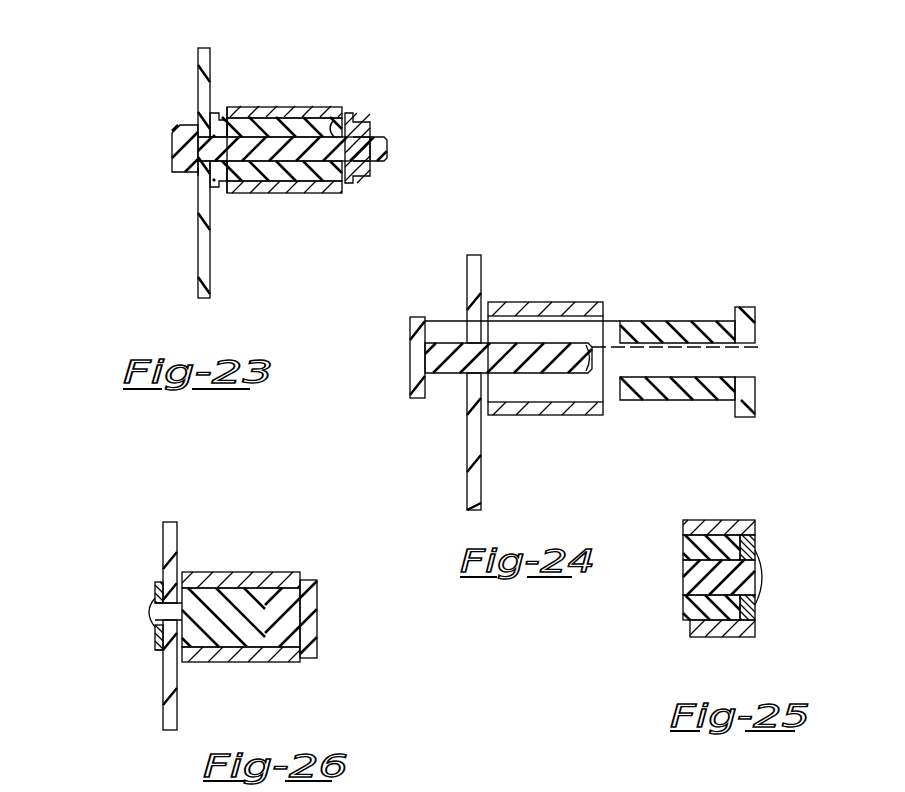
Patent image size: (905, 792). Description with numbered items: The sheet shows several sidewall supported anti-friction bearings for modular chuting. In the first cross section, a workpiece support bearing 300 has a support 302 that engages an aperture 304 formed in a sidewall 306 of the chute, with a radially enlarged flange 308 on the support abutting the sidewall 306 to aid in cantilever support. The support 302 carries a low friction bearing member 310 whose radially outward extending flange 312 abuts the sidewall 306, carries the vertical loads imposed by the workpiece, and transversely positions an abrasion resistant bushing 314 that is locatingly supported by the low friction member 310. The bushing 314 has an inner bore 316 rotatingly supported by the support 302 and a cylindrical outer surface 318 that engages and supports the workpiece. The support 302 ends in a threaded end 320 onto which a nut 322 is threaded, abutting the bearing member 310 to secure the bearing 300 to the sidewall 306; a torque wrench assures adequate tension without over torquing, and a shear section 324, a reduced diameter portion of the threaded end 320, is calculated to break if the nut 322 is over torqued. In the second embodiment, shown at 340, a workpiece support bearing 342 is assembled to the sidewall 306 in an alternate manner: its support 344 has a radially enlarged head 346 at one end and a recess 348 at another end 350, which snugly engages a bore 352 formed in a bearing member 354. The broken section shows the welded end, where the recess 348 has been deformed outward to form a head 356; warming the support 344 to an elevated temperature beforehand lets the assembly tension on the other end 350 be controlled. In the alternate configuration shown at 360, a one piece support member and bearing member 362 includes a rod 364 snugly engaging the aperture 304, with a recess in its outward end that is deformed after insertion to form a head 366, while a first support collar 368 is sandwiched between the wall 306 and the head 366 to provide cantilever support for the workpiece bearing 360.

In FIG. 23, the workpiece support bearing 300 is at (316, 59).
In FIG. 23, the support 302 is at (334, 132).
In FIG. 23, the aperture 304 is at (197, 143).
In FIG. 26, the aperture 304 is at (152, 615).
In FIG. 23, the sidewall 306 is at (198, 263).
In FIG. 26, the sidewall 306 is at (163, 712).
In FIG. 23, the radially enlarged flange 308 is at (197, 177).
In FIG. 23, the low friction bearing member 310 is at (300, 193).
In FIG. 23, the radially outward extending flange 312 is at (218, 117).
In FIG. 23, the abrasion resistant bushing 314 is at (230, 108).
In FIG. 24, the abrasion resistant bushing 314 is at (508, 416).
In FIG. 25, the abrasion resistant bushing 314 is at (707, 518).
In FIG. 26, the abrasion resistant bushing 314 is at (275, 663).
In FIG. 23, the inner bore 316 is at (272, 172).
In FIG. 23, the cylindrical outer surface 318 is at (296, 86).
In FIG. 23, the threaded end 320 is at (387, 146).
In FIG. 23, the nut 322 is at (362, 183).
In FIG. 23, the shear section 324 is at (327, 123).
In FIG. 24, the workpiece support bearing assembly 340 is at (646, 303).
In FIG. 24, the workpiece support bearing 342 is at (628, 283).
In FIG. 24, the support 344 is at (513, 346).
In FIG. 24, the radially enlarged head 346 is at (427, 398).
In FIG. 24, the recess 348 is at (590, 362).
In FIG. 24, the other end 350 is at (542, 374).
In FIG. 25, the other end 350 is at (686, 610).
In FIG. 24, the bore 352 is at (662, 368).
In FIG. 25, the bore 352 is at (684, 568).
In FIG. 24, the bearing member 354 is at (720, 296).
In FIG. 25, the bearing member 354 is at (760, 505).
In FIG. 25, the head 356 is at (793, 588).
In FIG. 26, the one piece support member and bearing member 360 is at (270, 535).
In FIG. 26, the one piece support and bearing member 362 is at (263, 600).
In FIG. 26, the rod 364 is at (160, 652).
In FIG. 26, the head 366 is at (155, 600).
In FIG. 26, the first support collar 368 is at (155, 640).